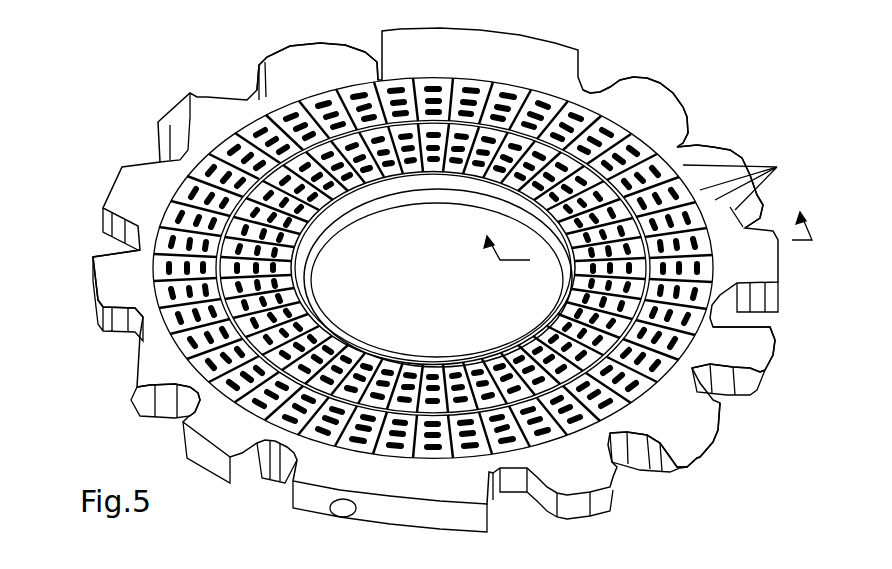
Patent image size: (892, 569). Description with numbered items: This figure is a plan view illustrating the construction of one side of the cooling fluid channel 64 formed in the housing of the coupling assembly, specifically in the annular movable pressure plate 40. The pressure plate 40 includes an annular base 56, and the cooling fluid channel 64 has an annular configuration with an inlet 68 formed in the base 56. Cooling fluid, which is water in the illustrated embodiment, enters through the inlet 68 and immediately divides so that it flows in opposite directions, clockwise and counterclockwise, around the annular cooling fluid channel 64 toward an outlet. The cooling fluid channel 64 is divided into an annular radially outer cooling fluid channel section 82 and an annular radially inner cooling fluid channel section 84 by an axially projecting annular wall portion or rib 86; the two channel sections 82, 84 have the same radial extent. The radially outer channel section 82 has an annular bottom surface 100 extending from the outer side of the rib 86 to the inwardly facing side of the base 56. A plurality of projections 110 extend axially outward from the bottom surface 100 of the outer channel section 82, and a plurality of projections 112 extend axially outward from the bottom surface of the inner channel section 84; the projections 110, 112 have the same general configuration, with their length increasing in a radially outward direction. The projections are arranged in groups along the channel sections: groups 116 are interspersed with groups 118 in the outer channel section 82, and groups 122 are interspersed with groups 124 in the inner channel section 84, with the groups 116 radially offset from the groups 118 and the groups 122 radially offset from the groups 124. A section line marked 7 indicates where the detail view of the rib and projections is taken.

The movable pressure plate 40 is at (217, 477).
The base 56 is at (743, 357).
The cooling fluid channel 64 is at (170, 313).
The inlet 68 is at (335, 519).
The radially outer cooling fluid channel section 82 is at (188, 389).
The radially inner cooling fluid channel section 84 is at (303, 323).
The annular wall portion or rib 86 is at (600, 413).
The bottom surface 100 is at (270, 110).
The projections 110 is at (754, 186).
The projections 112 is at (468, 387).
The groups of projections 116 is at (580, 85).
The groups of projections 118 is at (610, 88).
The groups of projections 122 is at (393, 170).
The groups of projections 124 is at (521, 193).
The section line 7 is at (647, 238).